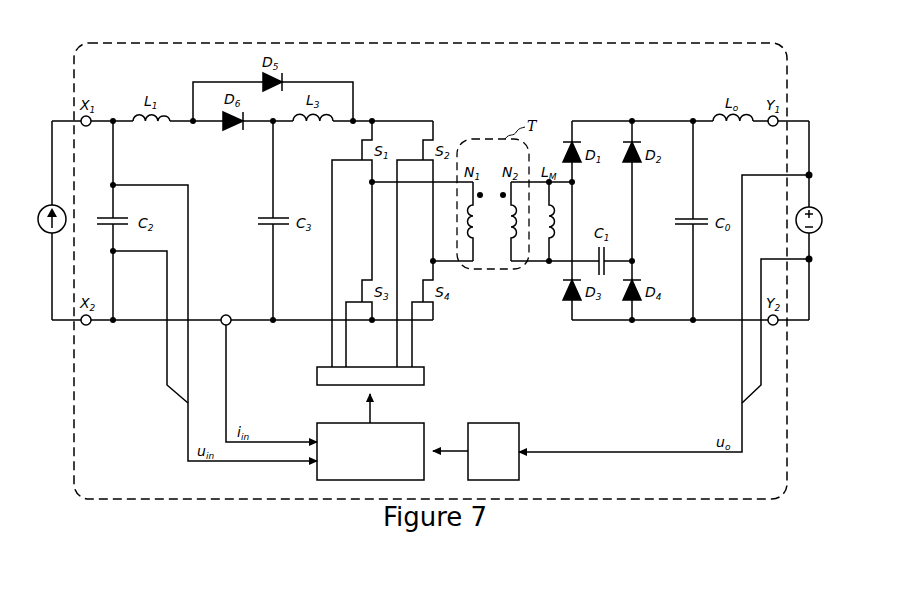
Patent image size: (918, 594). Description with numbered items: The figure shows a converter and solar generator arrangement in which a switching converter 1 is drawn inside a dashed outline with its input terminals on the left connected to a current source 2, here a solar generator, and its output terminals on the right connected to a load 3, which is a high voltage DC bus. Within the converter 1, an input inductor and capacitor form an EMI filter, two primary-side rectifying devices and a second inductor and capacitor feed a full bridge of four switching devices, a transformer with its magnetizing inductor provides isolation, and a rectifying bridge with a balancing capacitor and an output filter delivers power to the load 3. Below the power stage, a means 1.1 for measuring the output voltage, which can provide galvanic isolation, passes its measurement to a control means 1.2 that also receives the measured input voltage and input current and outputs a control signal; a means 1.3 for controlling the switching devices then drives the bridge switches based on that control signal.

The switching converter 1 is at (433, 43).
The current source 2 is at (47, 207).
The load 3 is at (822, 216).
The means for measuring the output voltage 1.1 is at (493, 451).
The control means 1.2 is at (370, 451).
The means for controlling the switching devices 1.3 is at (370, 376).